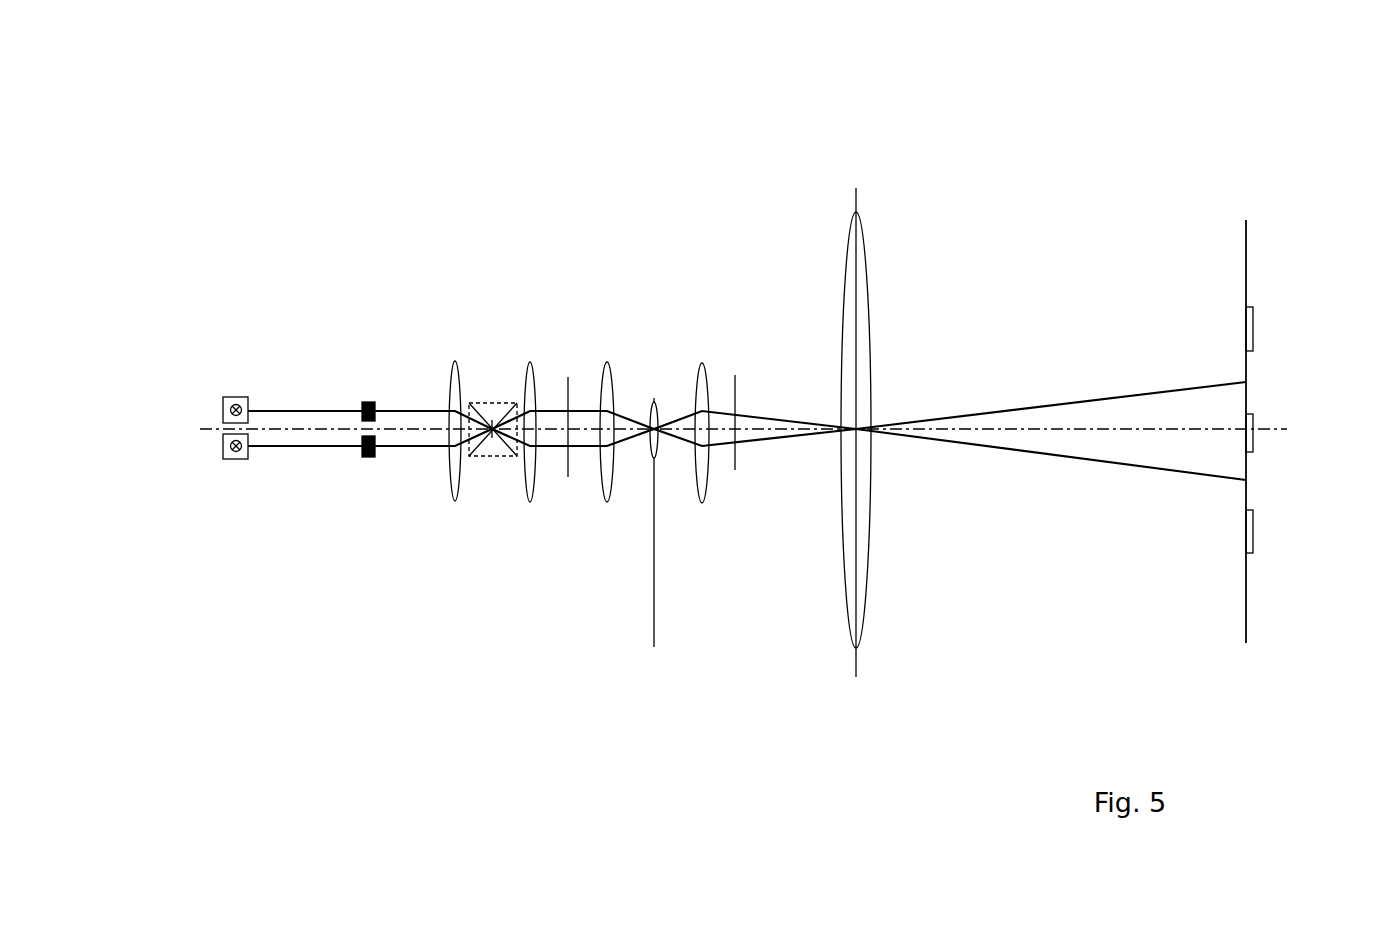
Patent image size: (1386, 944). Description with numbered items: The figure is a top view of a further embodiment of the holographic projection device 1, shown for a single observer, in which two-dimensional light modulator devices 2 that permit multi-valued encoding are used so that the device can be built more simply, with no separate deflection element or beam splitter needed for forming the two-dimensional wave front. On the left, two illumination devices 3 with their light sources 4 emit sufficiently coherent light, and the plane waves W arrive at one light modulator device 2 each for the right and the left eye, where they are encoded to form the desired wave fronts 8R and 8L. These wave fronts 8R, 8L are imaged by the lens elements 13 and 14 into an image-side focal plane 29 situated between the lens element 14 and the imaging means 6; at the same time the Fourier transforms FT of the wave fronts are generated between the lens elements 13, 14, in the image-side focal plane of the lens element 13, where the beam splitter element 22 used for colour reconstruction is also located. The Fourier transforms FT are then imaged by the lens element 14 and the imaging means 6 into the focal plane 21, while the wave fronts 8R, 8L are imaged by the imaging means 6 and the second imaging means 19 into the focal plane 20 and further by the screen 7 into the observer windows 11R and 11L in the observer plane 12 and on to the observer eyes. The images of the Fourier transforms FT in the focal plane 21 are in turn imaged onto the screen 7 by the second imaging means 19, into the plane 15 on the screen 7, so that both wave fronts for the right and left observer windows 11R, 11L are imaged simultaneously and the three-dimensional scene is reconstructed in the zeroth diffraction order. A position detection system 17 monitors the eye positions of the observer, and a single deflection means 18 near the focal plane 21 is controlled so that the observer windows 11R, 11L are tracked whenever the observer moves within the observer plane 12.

The holographic projection device 1 is at (747, 273).
The light modulator device 2 is at (365, 402).
The illumination device 3 is at (222, 410).
The light source 4 is at (236, 405).
The plane wave W is at (325, 446).
The wave front for the left eye 8L is at (407, 411).
The wave front for the right eye 8R is at (415, 446).
The lens element 13 is at (450, 467).
The beam splitter element 22 is at (492, 403).
The Fourier transform FT is at (492, 429).
The lens element 14 is at (527, 470).
The image-side focal plane 29 is at (567, 477).
The imaging means 6 is at (604, 365).
The deflection means 18 is at (652, 398).
The focal plane 21 is at (658, 455).
The position detection system 17 is at (657, 568).
The second imaging means 19 is at (700, 364).
The focal plane 20 is at (735, 470).
The screen 7 is at (850, 262).
The plane 15 is at (856, 675).
The observer plane 12 is at (1245, 615).
The right observer window 11R is at (1249, 403).
The left observer window 11L is at (1253, 475).